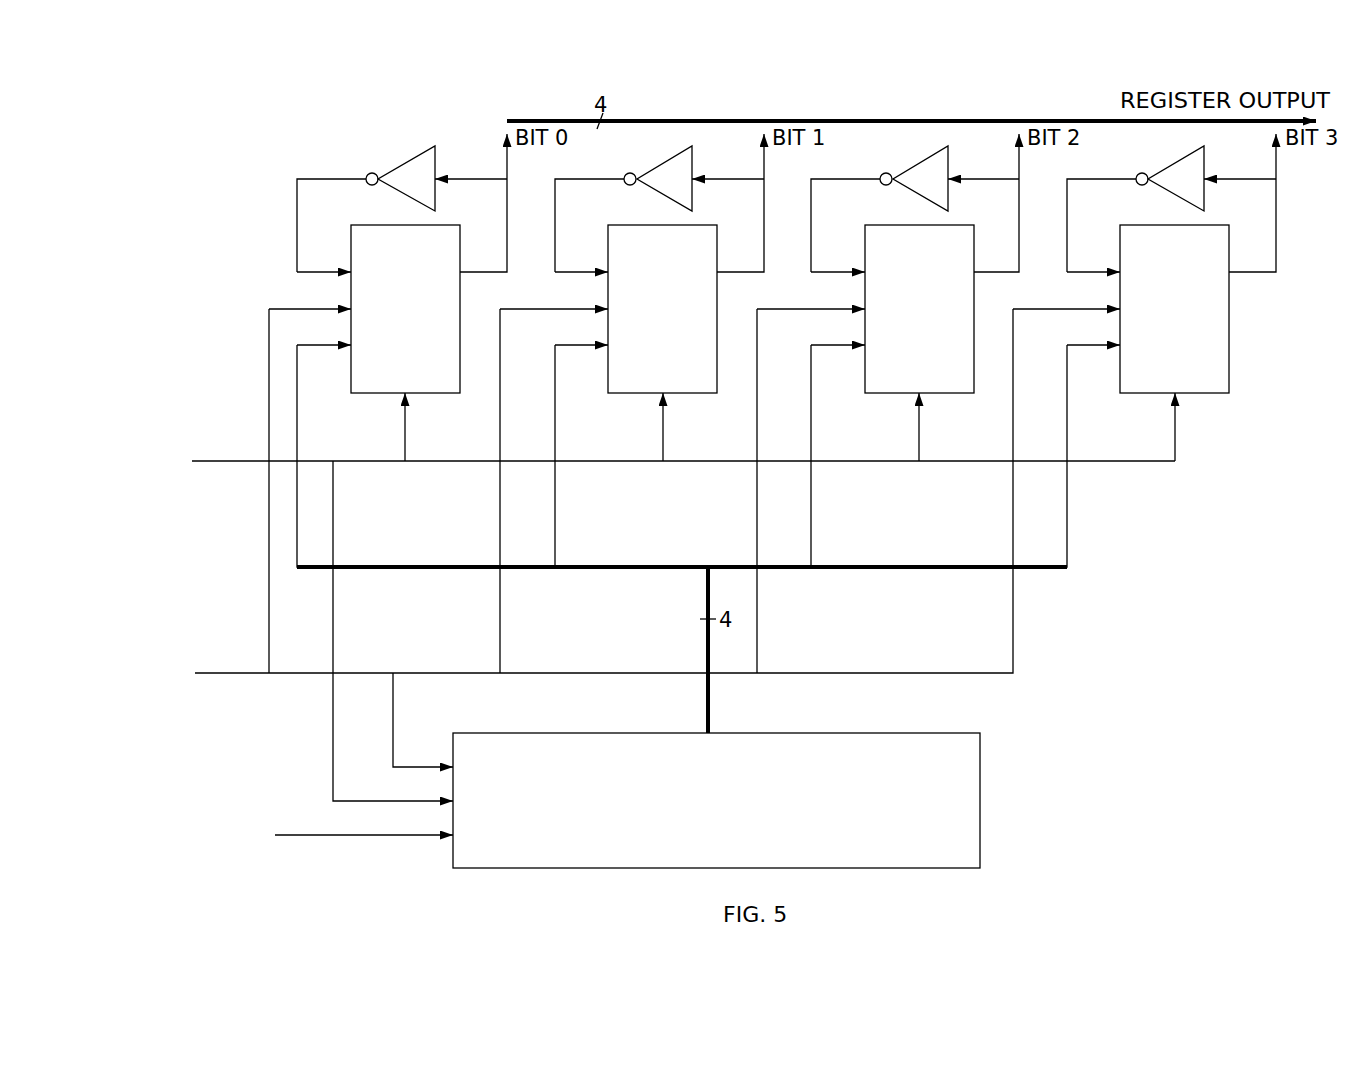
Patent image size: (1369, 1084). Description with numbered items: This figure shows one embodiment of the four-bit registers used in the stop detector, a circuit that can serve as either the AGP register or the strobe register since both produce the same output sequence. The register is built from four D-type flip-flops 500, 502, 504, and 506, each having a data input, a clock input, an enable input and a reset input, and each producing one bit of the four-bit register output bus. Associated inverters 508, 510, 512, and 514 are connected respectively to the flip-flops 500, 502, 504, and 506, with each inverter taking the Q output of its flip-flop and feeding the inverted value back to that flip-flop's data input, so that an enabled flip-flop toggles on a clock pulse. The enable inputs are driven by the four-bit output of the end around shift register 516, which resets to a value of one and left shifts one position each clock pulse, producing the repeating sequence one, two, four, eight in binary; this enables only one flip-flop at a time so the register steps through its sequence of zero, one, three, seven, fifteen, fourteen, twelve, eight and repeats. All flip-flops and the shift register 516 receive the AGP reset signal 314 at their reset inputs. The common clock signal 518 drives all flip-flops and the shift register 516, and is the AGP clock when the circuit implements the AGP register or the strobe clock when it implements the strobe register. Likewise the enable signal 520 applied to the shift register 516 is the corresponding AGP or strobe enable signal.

The D-type flip-flop 500 is at (388, 297).
The D-type flip-flop 502 is at (632, 297).
The D-type flip-flop 504 is at (888, 297).
The D-type flip-flop 506 is at (1144, 297).
The inverter 508 is at (402, 206).
The inverter 510 is at (659, 206).
The inverter 512 is at (915, 206).
The inverter 514 is at (1171, 206).
The end around shift register 516 is at (716, 800).
The AGP reset signal 314 is at (653, 616).
The clock signal 518 is at (572, 538).
The enable signal 520 is at (332, 826).